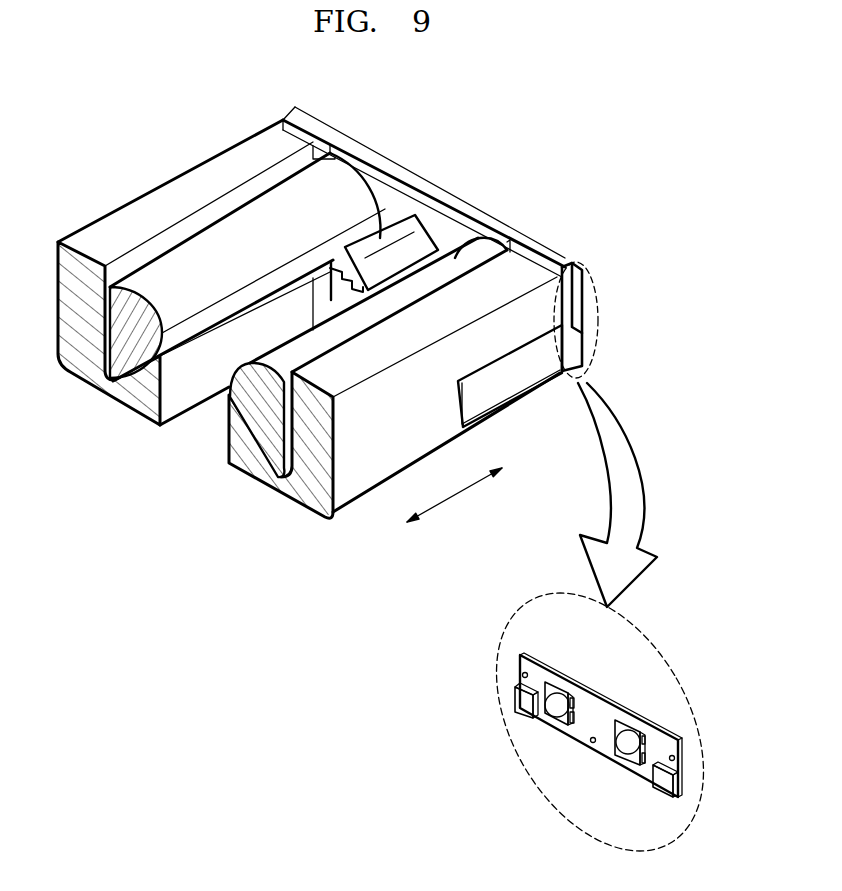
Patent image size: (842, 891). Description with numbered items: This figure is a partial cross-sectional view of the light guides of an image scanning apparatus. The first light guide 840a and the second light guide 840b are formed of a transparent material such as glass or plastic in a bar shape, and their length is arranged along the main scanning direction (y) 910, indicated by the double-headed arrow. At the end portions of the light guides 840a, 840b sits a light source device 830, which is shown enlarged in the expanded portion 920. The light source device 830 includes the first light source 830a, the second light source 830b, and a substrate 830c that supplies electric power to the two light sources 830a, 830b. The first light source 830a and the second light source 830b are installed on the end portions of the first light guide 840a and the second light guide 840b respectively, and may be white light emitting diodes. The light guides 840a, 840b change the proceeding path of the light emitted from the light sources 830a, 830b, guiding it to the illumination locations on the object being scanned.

The light source device 830 is at (590, 328).
The first light source 830a is at (556, 709).
The second light source 830b is at (630, 750).
The substrate 830c is at (615, 702).
The first light guide 840a is at (213, 248).
The second light guide 840b is at (295, 350).
The main scanning direction (y) 910 is at (470, 518).
The expanded portion 920 is at (637, 650).